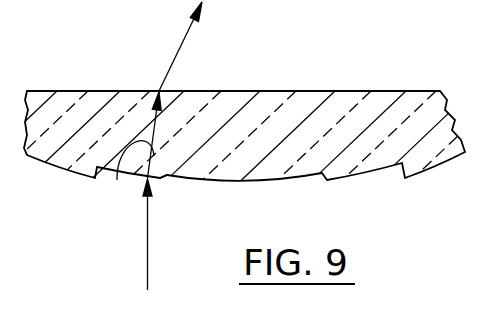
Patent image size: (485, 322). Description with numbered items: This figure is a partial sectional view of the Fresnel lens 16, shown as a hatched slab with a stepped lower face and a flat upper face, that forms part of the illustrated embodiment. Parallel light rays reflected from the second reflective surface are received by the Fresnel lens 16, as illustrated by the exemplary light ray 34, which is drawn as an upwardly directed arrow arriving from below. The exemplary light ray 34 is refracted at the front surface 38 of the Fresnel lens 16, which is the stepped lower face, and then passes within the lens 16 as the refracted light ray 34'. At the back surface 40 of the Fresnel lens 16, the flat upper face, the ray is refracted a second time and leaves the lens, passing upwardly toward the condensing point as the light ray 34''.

The Fresnel lens 16 is at (281, 101).
The back surface 40 is at (72, 91).
The front surface 38 is at (162, 182).
The exemplary light ray 34 is at (126, 234).
The refracted light ray 34' is at (123, 160).
The light ray 34'' is at (204, 46).